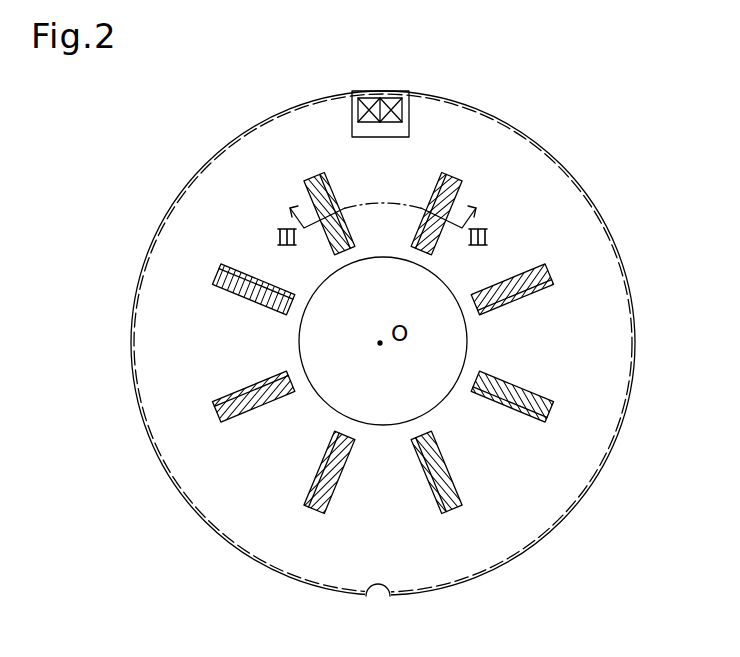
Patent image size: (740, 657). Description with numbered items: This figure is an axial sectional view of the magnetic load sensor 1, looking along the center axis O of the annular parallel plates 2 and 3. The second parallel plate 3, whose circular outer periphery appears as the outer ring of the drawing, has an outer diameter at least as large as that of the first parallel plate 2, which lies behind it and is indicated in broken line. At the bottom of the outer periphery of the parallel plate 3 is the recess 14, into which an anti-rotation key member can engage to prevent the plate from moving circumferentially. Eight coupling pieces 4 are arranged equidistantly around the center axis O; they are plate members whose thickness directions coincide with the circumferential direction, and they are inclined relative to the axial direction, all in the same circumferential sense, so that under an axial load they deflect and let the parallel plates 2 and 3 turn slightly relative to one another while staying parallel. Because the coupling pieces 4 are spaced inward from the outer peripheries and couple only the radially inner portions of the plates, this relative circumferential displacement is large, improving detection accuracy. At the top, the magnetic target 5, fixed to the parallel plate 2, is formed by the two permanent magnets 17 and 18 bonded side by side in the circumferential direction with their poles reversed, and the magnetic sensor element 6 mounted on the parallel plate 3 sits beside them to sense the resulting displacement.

The magnetic load sensor 1 is at (417, 343).
The first parallel plate 2 is at (633, 318).
The second parallel plate 3 is at (602, 262).
The coupling piece 4 is at (451, 178).
The magnetic target 5 is at (352, 114).
The magnetic sensor element 6 is at (409, 112).
The recess 14 is at (380, 586).
The permanent magnet 17 is at (368, 103).
The permanent magnet 18 is at (392, 103).